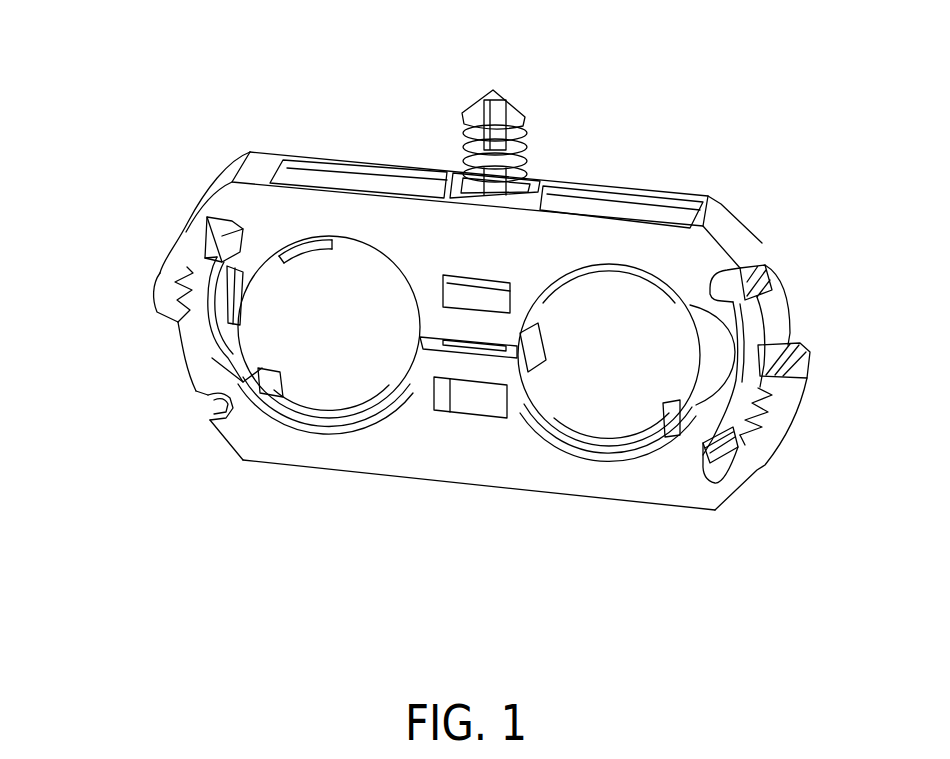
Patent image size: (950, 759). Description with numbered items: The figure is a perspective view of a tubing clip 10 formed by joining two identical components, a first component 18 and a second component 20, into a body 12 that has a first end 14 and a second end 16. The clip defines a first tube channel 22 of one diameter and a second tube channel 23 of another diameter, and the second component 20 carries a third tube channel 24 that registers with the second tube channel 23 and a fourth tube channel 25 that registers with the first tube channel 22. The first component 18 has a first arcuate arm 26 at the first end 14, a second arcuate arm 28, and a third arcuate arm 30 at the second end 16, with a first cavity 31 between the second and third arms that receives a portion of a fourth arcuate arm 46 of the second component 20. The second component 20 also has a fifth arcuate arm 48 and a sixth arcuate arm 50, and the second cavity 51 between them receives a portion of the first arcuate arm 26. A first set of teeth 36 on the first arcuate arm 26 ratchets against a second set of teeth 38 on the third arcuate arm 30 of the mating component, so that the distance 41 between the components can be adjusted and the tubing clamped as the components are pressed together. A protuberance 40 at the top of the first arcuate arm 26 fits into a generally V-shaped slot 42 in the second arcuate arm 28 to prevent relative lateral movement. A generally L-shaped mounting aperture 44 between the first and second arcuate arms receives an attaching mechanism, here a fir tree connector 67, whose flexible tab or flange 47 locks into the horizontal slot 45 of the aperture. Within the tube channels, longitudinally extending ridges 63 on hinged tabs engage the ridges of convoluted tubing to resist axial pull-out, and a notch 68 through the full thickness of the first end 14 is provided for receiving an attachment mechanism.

The tubing clip 10 is at (104, 101).
The body 12 is at (322, 146).
The first end 14 is at (72, 292).
The second end 16 is at (845, 262).
The first component 18 is at (272, 440).
The second component 20 is at (272, 226).
The first tube channel 22 is at (361, 372).
The second tube channel 23 is at (639, 388).
The third tube channel 24 is at (628, 302).
The fourth tube channel 25 is at (368, 296).
The first arcuate arm 26 is at (190, 350).
The second arcuate arm 28 is at (716, 416).
The third arcuate arm 30 is at (792, 398).
The first cavity 31 is at (718, 466).
The first set of teeth 36 is at (196, 272).
The second set of teeth 38 is at (772, 400).
The protuberance 40 is at (248, 277).
The distance 41 is at (421, 340).
The slot 42 is at (733, 359).
The mounting aperture 44 is at (543, 187).
The horizontal slot 45 is at (478, 407).
The fourth arcuate arm 46 is at (742, 321).
The tab or flange 47 is at (505, 286).
The fifth arcuate arm 48 is at (236, 311).
The sixth arcuate arm 50 is at (190, 238).
The second cavity 51 is at (232, 215).
The ridges 63 is at (316, 388).
The fir tree connector 67 is at (497, 94).
The notch 68 is at (210, 403).